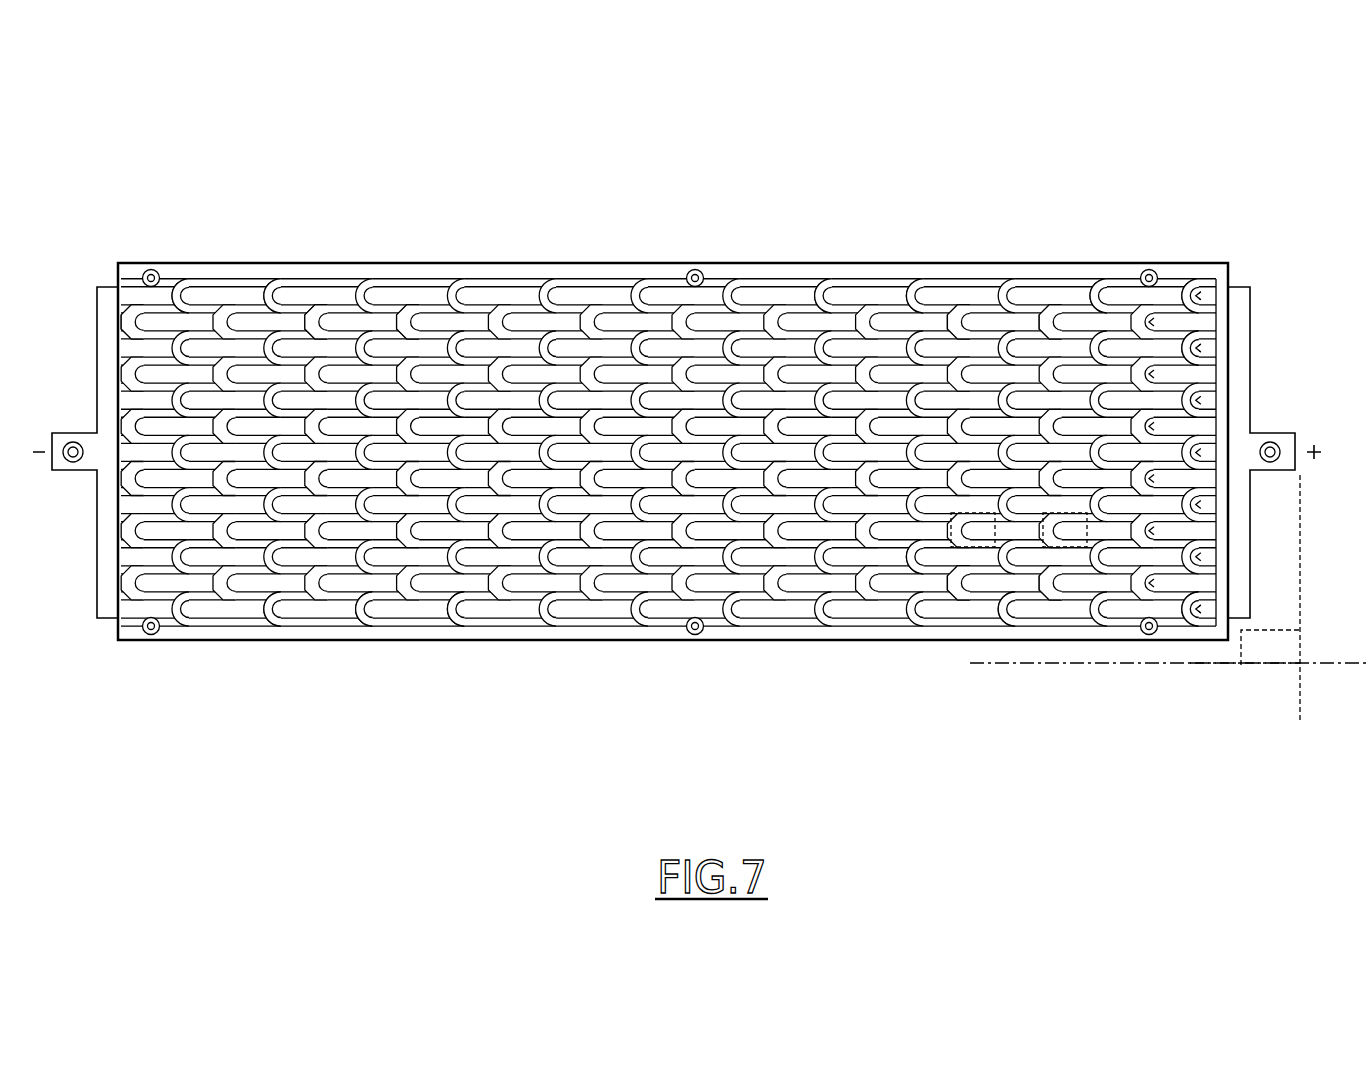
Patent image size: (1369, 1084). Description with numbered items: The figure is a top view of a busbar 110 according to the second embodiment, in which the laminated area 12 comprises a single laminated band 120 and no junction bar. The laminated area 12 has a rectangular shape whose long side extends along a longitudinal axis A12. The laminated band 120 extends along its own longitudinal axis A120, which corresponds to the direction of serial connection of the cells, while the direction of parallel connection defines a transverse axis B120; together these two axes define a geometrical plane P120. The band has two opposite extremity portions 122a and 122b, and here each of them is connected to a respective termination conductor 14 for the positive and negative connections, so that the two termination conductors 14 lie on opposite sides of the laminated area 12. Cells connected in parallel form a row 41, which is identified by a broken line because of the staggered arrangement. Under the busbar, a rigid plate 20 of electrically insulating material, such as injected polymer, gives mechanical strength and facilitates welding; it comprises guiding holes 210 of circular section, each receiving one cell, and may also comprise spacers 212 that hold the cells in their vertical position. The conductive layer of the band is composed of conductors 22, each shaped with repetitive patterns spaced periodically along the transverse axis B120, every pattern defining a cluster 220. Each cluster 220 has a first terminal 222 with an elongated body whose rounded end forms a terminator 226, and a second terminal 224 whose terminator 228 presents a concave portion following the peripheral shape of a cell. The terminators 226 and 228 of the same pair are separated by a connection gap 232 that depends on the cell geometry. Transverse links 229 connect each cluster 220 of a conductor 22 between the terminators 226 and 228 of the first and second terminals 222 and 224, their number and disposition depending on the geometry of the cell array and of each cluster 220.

The busbar 110 is at (975, 128).
The termination conductor 14 is at (105, 328).
The laminated area 12 is at (505, 283).
The laminated band 120 is at (607, 298).
The rigid plate 20 is at (333, 272).
The guiding hole 210 is at (296, 278).
The spacer 212 is at (372, 328).
The connection gap 232 is at (905, 280).
The terminator 226 is at (990, 305).
The terminator 228 is at (1085, 318).
The extremity portion 122a is at (1195, 318).
The extremity portion 122b is at (140, 298).
The conductor 22 is at (505, 610).
The transverse link 229 is at (935, 570).
The second terminal 224 is at (985, 578).
The first terminal 222 is at (1022, 600).
The cluster 220 is at (1040, 585).
The row 41 is at (1192, 606).
The geometrical plane P120 is at (1270, 647).
The longitudinal axis A12 is at (1271, 648).
The longitudinal axis A120 is at (1169, 684).
The transverse axis B120 is at (1303, 614).